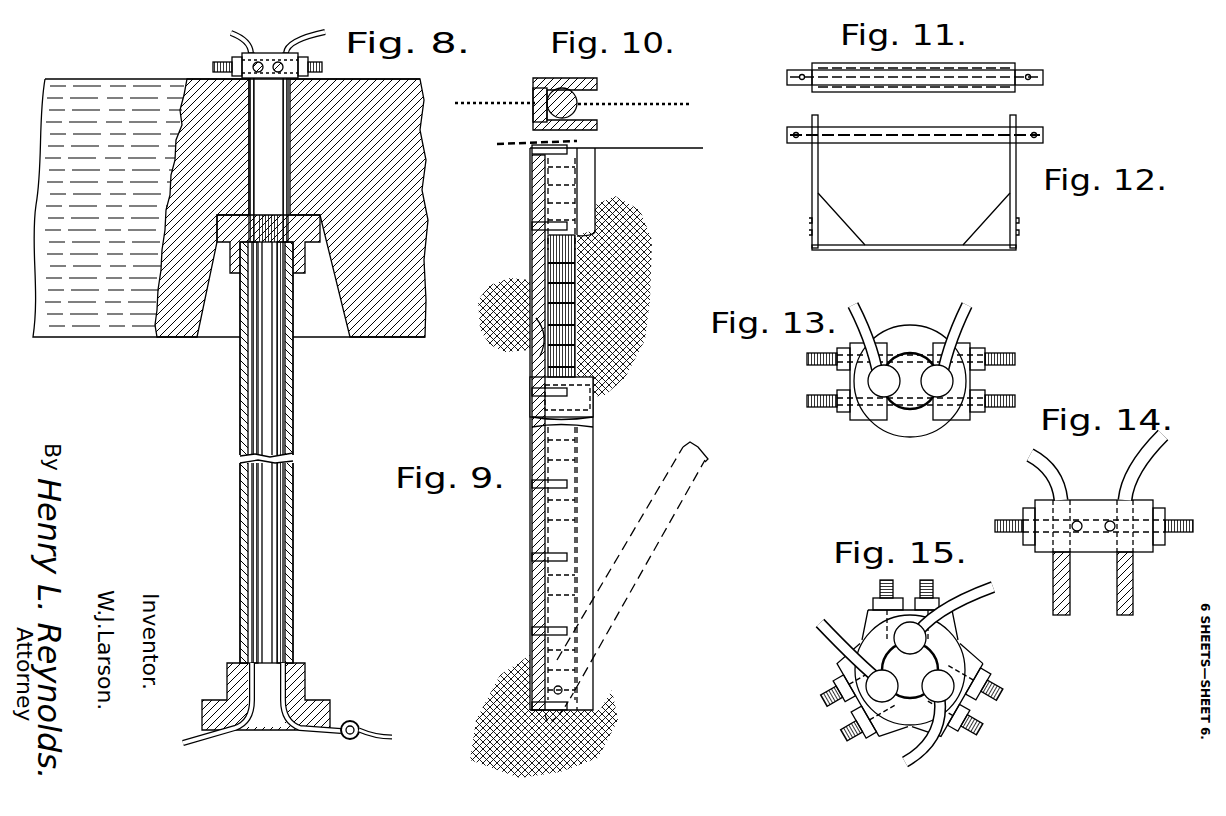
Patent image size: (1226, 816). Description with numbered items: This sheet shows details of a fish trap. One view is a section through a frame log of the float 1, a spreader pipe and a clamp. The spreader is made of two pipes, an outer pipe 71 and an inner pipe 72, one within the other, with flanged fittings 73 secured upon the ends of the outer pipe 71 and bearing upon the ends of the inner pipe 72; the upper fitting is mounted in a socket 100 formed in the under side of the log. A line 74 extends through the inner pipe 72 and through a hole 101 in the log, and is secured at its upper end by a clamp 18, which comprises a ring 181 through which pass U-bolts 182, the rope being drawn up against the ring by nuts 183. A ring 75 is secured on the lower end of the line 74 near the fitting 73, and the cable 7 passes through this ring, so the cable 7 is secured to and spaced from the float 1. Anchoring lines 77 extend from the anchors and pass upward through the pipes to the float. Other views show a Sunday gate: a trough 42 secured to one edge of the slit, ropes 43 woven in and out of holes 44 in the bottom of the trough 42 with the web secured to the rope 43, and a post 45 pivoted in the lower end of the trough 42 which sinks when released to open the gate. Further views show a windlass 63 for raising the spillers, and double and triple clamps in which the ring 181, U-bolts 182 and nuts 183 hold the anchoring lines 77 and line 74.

In FIG. 8, the float 1 is at (96, 40).
In FIG. 8, the cable 7 is at (372, 740).
In FIG. 8, the clamp 18 is at (284, 52).
In FIG. 13, the clamp 18 is at (928, 434).
In FIG. 14, the clamp 18 is at (1092, 493).
In FIG. 15, the clamp 18 is at (965, 645).
In FIG. 10, the trough 42 is at (597, 85).
In FIG. 9, the trough 42 is at (585, 210).
In FIG. 10, the rope 43 is at (533, 106).
In FIG. 9, the rope 43 is at (545, 265).
In FIG. 9, the hole 44 is at (542, 345).
In FIG. 10, the post 45 is at (577, 106).
In FIG. 9, the post 45 is at (565, 315).
In FIG. 11, the windlass 63 is at (962, 80).
In FIG. 12, the windlass 63 is at (912, 143).
In FIG. 8, the outer pipe 71 is at (293, 420).
In FIG. 8, the inner pipe 72 is at (282, 557).
In FIG. 8, the flanged fitting 73 is at (230, 228).
In FIG. 8, the line 74 is at (289, 123).
In FIG. 13, the line 74 is at (977, 318).
In FIG. 14, the line 74 is at (1135, 580).
In FIG. 15, the line 74 is at (983, 592).
In FIG. 8, the ring 75 is at (378, 698).
In FIG. 8, the anchoring line 77 is at (250, 136).
In FIG. 13, the anchoring line 77 is at (866, 317).
In FIG. 14, the anchoring line 77 is at (1070, 580).
In FIG. 15, the anchoring line 77 is at (826, 642).
In FIG. 8, the socket 100 is at (318, 310).
In FIG. 8, the hole 101 is at (272, 189).
In FIG. 8, the ring 181 is at (243, 53).
In FIG. 13, the ring 181 is at (892, 425).
In FIG. 14, the ring 181 is at (1142, 507).
In FIG. 15, the ring 181 is at (955, 646).
In FIG. 13, the U-bolt 182 is at (830, 366).
In FIG. 14, the U-bolt 182 is at (1000, 523).
In FIG. 15, the U-bolt 182 is at (912, 698).
In FIG. 13, the nut 183 is at (993, 384).
In FIG. 14, the nut 183 is at (1025, 515).
In FIG. 15, the nut 183 is at (875, 603).